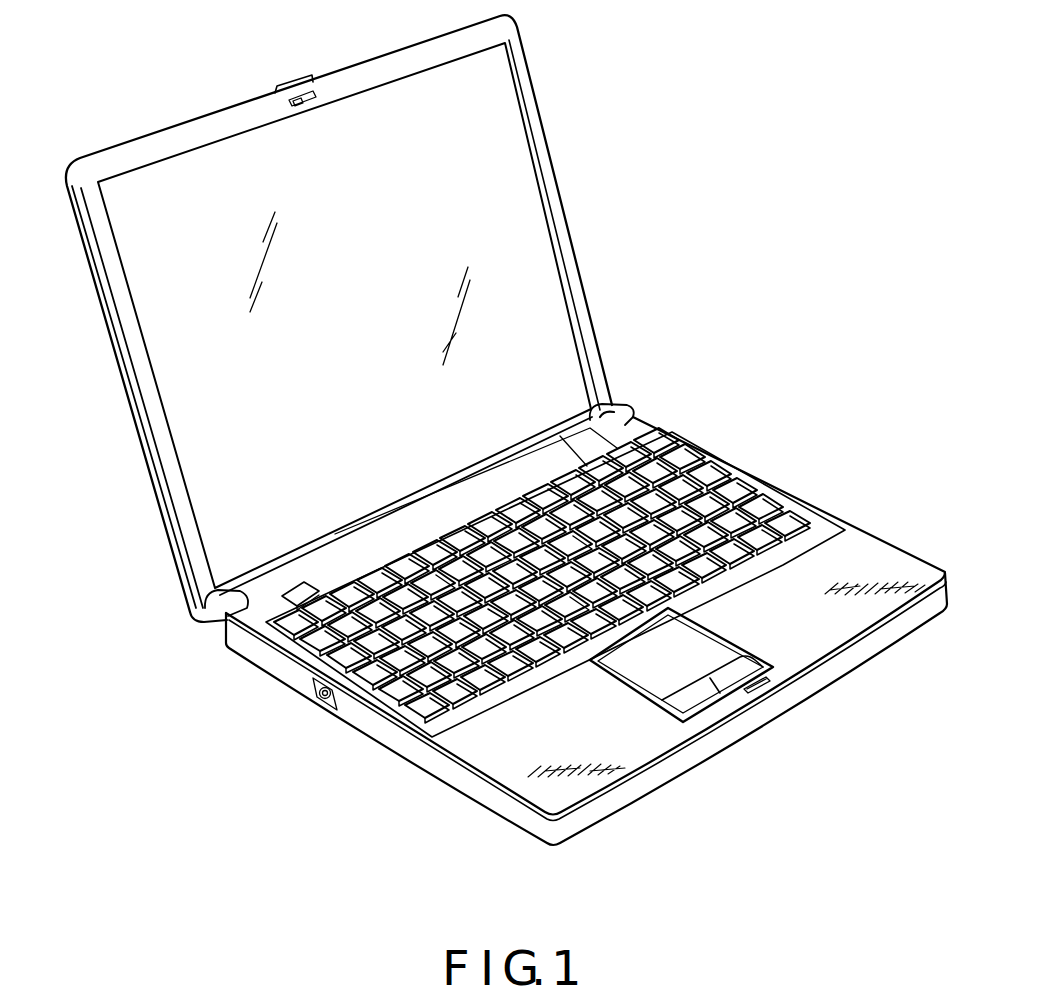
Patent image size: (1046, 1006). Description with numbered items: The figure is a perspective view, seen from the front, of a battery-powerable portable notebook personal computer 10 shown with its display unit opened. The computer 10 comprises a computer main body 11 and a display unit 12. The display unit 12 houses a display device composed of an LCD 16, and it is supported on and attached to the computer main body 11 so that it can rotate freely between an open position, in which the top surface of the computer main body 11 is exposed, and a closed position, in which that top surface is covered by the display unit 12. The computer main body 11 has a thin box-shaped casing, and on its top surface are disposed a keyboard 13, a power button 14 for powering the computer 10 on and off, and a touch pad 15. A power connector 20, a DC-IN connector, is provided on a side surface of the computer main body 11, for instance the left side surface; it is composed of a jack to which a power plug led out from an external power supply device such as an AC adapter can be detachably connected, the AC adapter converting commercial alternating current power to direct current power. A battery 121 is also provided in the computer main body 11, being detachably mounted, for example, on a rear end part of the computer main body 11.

The notebook personal computer 10 is at (176, 631).
The computer main body 11 is at (453, 775).
The display unit 12 is at (148, 435).
The keyboard 13 is at (448, 672).
The power button 14 is at (305, 590).
The touch pad 15 is at (633, 672).
The LCD 16 is at (510, 132).
The power connector 20 is at (313, 690).
The battery 121 is at (572, 463).